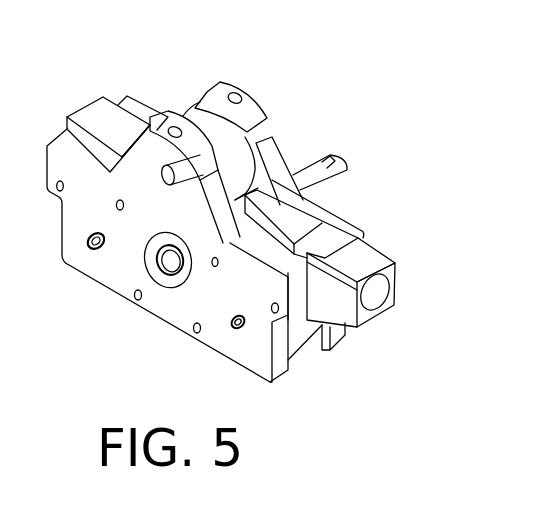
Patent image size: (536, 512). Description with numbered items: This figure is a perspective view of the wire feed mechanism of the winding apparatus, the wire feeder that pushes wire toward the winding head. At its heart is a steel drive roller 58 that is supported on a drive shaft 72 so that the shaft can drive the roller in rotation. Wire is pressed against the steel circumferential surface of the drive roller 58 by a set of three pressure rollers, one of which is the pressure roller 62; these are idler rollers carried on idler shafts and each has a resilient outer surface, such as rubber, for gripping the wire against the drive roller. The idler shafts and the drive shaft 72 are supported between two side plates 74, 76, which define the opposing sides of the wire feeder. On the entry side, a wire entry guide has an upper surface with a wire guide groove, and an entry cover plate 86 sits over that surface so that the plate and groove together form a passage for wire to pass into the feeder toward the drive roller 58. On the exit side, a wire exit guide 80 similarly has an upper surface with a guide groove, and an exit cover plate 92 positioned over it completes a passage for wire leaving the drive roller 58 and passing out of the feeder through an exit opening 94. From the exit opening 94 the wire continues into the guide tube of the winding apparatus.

The drive roller 58 is at (187, 118).
The pressure roller 62 is at (300, 343).
The drive shaft 72 is at (303, 175).
The side plate 74 is at (177, 313).
The side plate 76 is at (245, 100).
The wire exit guide 80 is at (340, 318).
The entry cover plate 86 is at (93, 117).
The exit cover plate 92 is at (303, 222).
The exit opening 94 is at (380, 292).